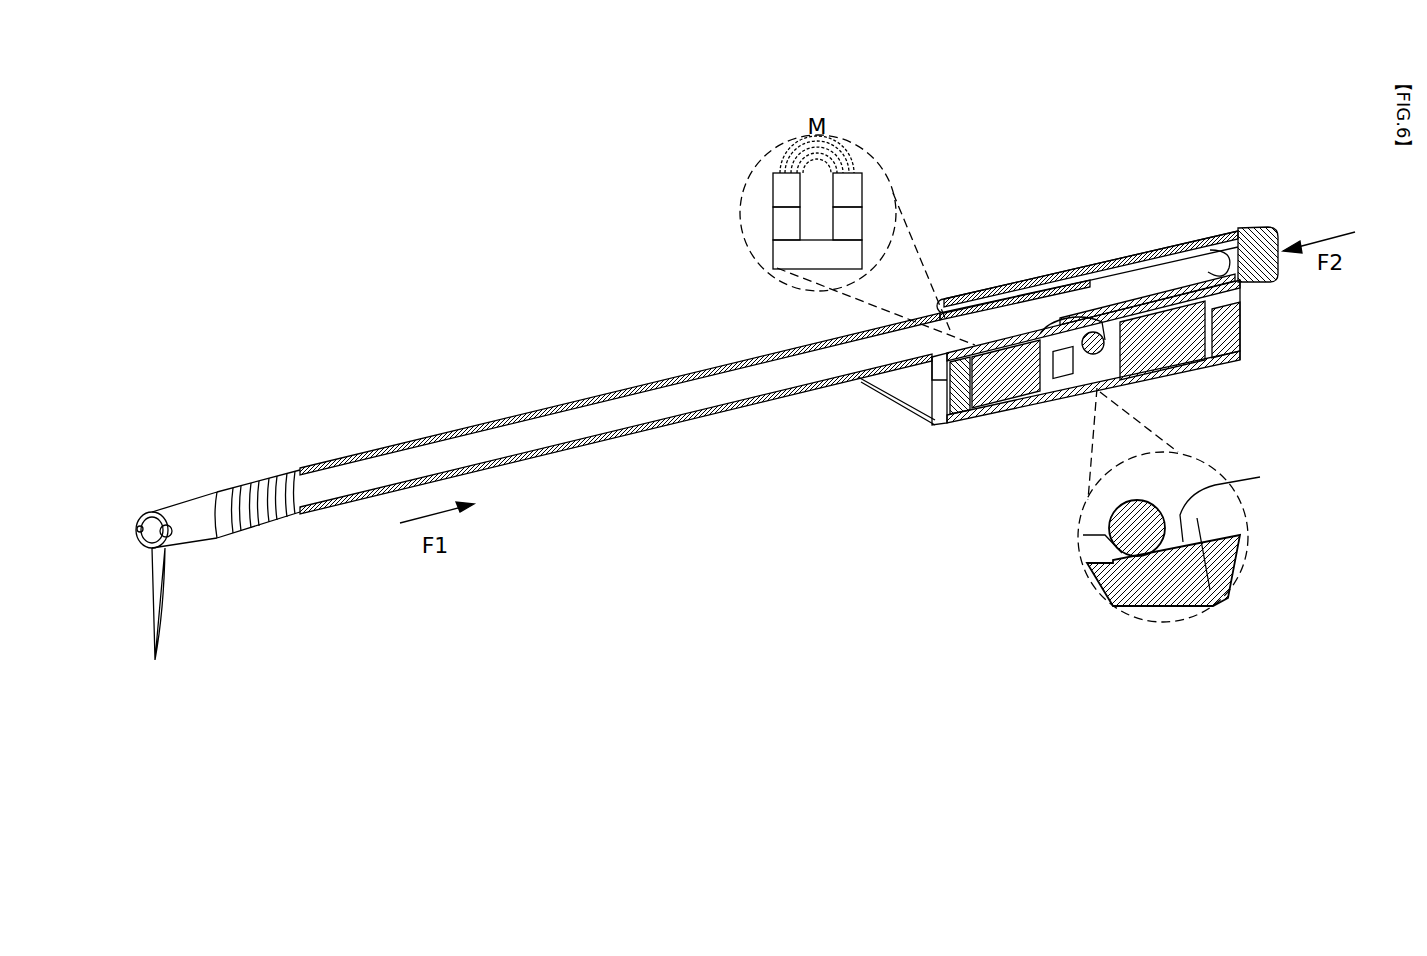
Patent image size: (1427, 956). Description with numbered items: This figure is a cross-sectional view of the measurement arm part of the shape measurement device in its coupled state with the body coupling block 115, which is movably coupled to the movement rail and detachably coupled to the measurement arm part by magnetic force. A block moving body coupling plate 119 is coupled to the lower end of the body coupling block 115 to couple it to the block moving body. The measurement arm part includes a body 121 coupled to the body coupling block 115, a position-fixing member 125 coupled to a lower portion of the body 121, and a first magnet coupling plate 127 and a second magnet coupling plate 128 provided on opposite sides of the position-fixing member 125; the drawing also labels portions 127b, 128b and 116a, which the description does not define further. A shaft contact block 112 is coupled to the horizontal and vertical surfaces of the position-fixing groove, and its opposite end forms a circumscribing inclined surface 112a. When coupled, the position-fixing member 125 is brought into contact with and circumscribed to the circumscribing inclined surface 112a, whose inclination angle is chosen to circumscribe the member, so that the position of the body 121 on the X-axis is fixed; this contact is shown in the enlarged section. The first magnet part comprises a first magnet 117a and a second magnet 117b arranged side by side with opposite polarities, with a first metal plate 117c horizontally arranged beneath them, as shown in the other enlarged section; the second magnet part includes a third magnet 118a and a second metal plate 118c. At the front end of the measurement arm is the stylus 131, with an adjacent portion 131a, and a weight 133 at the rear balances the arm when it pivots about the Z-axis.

The shaft contact block 112 is at (1025, 332).
The circumscribing inclined surface 112a is at (1050, 323).
The body coupling block 115 is at (943, 398).
The guide cover 116a is at (1117, 340).
The first magnet 117a is at (773, 200).
The second magnet 117b is at (862, 190).
The first metal plate 117c is at (773, 258).
The third magnet 118a is at (1243, 332).
The second metal plate 118c is at (1177, 360).
The block moving body coupling plate 119 is at (900, 395).
The body 121 is at (1215, 227).
The position-fixing member 125 is at (1090, 331).
The first magnet coupling plate 127 is at (1035, 387).
The bottom plate 127b is at (957, 423).
The second magnet coupling plate 128 is at (1177, 277).
The inner rail 128b is at (1150, 315).
The stylus 131 is at (165, 596).
The needle holder 131a is at (283, 522).
The weight 133 is at (1255, 228).